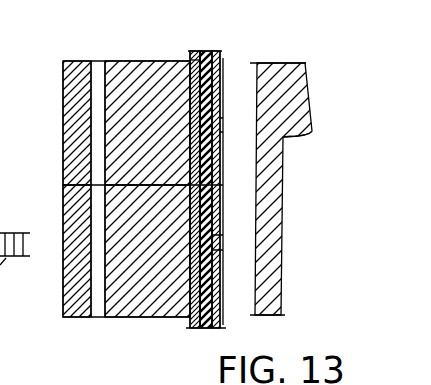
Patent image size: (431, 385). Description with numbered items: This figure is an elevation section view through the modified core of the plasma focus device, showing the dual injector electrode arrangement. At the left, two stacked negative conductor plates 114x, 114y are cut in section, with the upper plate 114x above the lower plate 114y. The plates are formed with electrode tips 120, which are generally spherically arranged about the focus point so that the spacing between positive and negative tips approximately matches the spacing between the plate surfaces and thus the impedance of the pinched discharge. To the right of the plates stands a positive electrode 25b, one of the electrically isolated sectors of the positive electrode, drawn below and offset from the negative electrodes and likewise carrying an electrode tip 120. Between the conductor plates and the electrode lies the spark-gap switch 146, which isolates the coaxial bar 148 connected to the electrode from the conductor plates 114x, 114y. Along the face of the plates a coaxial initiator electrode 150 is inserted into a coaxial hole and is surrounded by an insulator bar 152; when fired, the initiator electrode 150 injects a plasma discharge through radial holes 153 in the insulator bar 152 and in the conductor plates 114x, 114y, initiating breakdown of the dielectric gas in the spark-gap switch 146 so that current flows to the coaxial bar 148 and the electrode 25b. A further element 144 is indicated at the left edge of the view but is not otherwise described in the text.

The negative conductor plate 114x is at (62, 114).
The negative conductor plate 114y is at (62, 297).
The electrode tip 120 is at (97, 64).
The ladder member 144 is at (15, 235).
The coaxial initiator electrode 150 is at (200, 51).
The insulator bar 152 is at (197, 52).
The radial hole 153 is at (239, 252).
The positive electrode 25b is at (311, 112).
The spark-gap switch 146 is at (255, 40).
The coaxial bar 148 is at (281, 294).